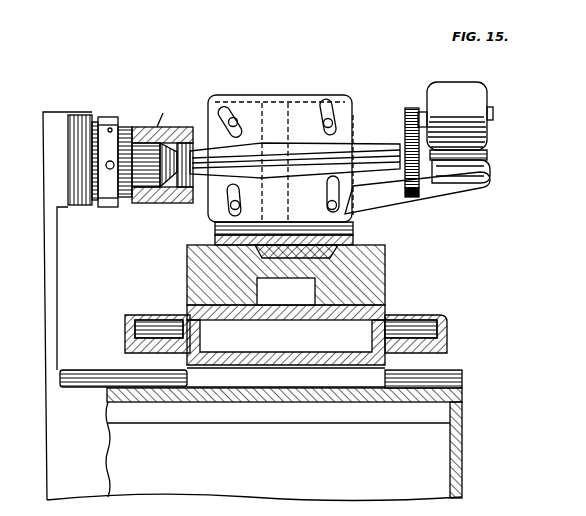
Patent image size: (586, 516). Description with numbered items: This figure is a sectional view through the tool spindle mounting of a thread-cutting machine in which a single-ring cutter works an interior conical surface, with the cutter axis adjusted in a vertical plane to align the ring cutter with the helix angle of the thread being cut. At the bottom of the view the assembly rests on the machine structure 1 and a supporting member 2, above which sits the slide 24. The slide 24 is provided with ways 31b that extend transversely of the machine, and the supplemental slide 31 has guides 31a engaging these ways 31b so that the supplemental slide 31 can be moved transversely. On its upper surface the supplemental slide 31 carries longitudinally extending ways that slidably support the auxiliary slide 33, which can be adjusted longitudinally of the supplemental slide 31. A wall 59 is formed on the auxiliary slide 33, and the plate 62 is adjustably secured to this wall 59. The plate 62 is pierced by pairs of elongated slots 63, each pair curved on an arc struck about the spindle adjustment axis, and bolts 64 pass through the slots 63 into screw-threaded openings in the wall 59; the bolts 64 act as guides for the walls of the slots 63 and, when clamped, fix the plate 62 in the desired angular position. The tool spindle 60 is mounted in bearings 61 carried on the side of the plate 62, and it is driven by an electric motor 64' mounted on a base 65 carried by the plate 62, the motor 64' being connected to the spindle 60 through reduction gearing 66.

The bed 1 is at (258, 402).
The bracket 2 is at (58, 298).
The slide 24 is at (316, 348).
The supplemental slide 31 is at (386, 271).
The guides 31a is at (372, 303).
The ways 31b is at (314, 304).
The auxiliary slide 33 is at (340, 259).
The wall 59 is at (352, 117).
The tool spindle 60 is at (167, 185).
The bearings 61 is at (378, 145).
The plate 62 is at (443, 197).
The elongated slots 63 is at (327, 98).
The bolts 64 is at (309, 166).
The electric motor 64' is at (455, 112).
The base 65 is at (469, 166).
The reduction gearing 66 is at (409, 108).